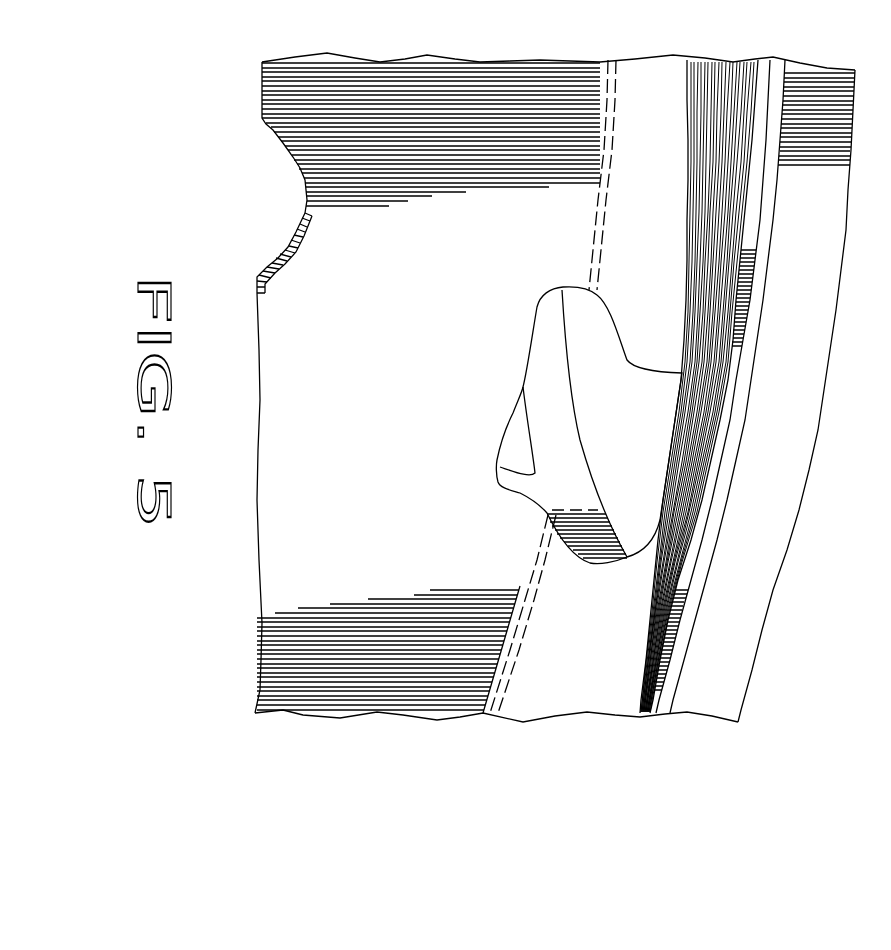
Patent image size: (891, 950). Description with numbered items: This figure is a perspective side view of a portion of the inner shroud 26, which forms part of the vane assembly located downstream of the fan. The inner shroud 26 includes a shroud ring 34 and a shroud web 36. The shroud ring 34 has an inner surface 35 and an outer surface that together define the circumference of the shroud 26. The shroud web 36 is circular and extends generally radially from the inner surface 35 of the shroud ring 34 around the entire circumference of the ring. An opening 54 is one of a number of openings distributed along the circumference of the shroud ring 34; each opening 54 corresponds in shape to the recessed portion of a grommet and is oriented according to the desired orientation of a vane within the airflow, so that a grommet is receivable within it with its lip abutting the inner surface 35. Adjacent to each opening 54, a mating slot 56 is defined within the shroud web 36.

The inner shroud 26 is at (270, 726).
The shroud ring 34 is at (555, 720).
The inner surface 35 is at (620, 667).
The shroud web 36 is at (383, 673).
The opening 54 is at (652, 445).
The mating slot 56 is at (530, 335).